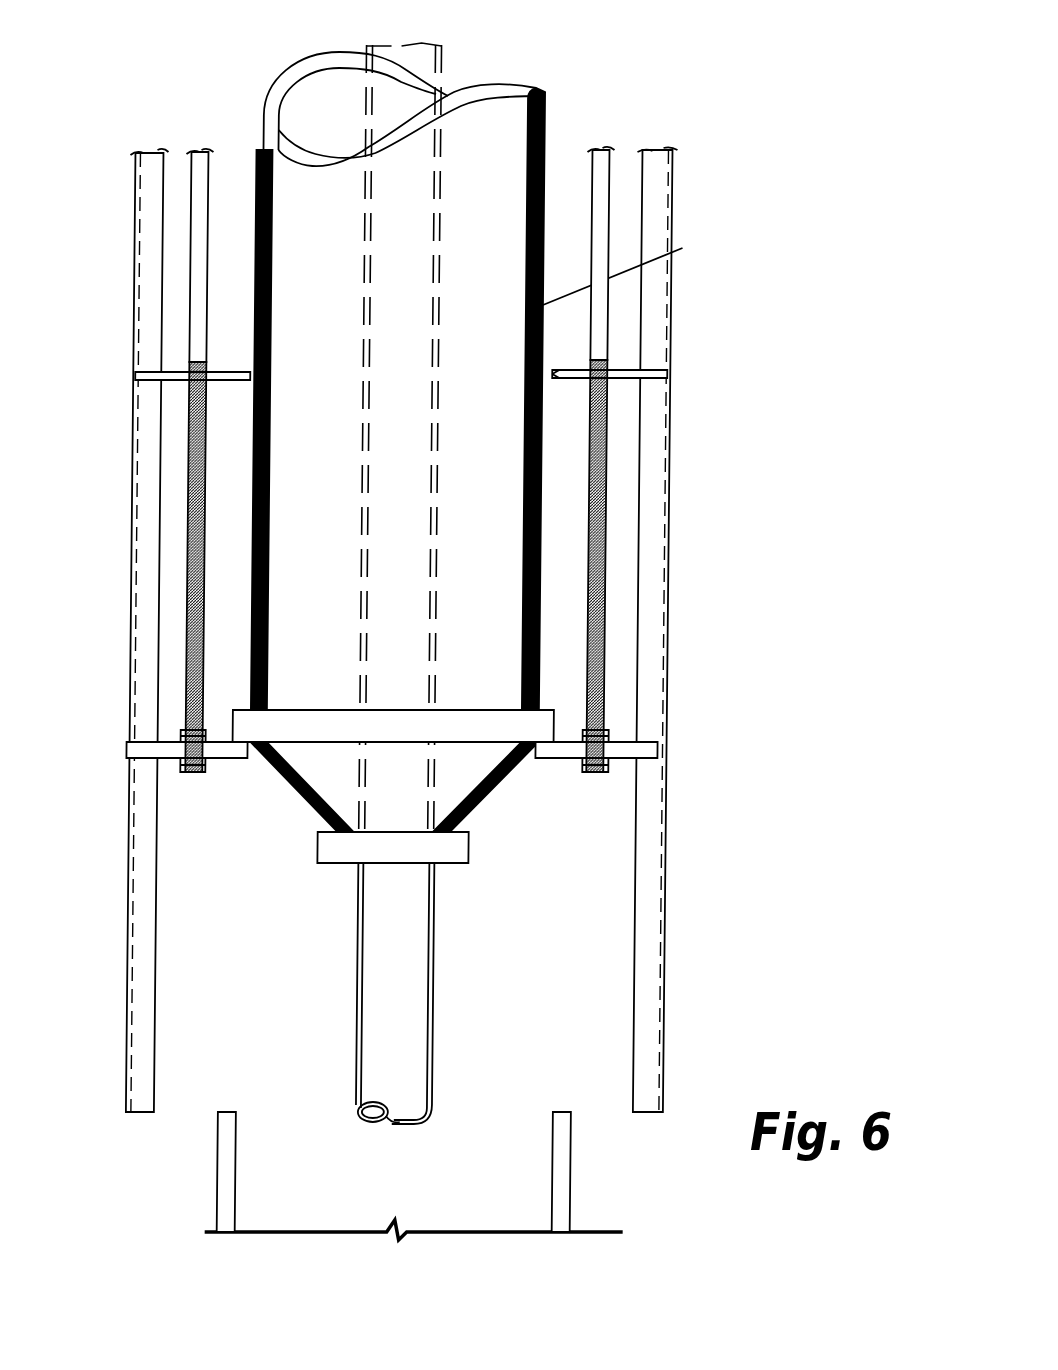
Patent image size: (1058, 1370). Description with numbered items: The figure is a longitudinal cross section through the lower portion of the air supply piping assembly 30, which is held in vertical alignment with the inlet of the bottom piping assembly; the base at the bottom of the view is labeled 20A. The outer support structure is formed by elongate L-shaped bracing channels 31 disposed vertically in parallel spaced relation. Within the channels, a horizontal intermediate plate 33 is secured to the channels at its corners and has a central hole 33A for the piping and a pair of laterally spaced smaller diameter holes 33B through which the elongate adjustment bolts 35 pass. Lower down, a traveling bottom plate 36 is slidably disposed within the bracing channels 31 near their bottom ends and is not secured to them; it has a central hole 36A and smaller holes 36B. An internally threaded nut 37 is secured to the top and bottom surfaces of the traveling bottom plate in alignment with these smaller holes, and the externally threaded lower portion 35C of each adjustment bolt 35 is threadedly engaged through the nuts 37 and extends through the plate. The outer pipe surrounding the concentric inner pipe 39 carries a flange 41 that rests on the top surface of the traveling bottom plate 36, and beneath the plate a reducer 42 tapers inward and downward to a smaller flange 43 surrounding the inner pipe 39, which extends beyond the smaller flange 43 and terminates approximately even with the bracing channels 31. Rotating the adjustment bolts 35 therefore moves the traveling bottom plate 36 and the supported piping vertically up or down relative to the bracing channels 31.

The base frame 20A is at (222, 1183).
The air supply piping assembly 30 is at (715, 162).
The bracing channel 31 is at (128, 928).
The intermediate plate 33 is at (431, 370).
The central hole 33A is at (552, 377).
The smaller diameter hole 33B is at (214, 373).
The adjustment bolt 35 is at (397, 459).
The externally threaded lower portion 35C is at (187, 472).
The traveling bottom plate 36 is at (424, 742).
The central hole 36A is at (240, 760).
The smaller diameter hole 36B is at (210, 753).
The internally threaded nut 37 is at (182, 737).
The inner pipe 39 is at (415, 190).
The flange 41 is at (282, 720).
The reducer 42 is at (481, 807).
The smaller flange 43 is at (470, 857).